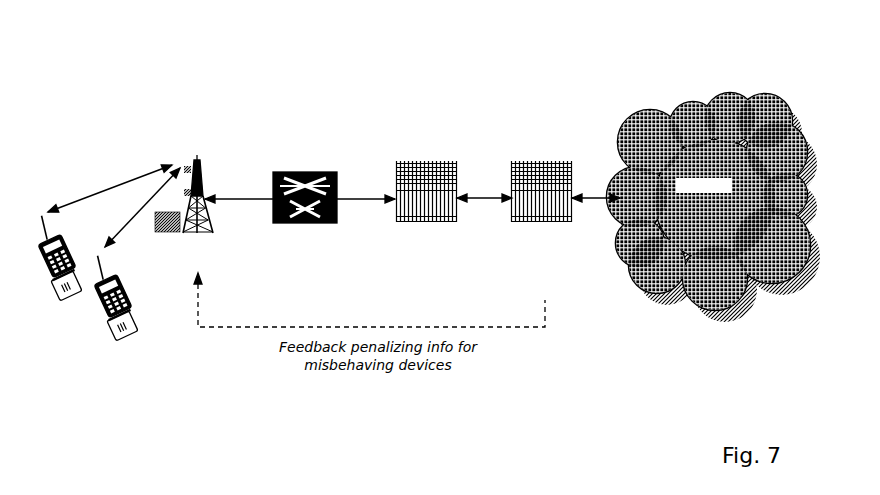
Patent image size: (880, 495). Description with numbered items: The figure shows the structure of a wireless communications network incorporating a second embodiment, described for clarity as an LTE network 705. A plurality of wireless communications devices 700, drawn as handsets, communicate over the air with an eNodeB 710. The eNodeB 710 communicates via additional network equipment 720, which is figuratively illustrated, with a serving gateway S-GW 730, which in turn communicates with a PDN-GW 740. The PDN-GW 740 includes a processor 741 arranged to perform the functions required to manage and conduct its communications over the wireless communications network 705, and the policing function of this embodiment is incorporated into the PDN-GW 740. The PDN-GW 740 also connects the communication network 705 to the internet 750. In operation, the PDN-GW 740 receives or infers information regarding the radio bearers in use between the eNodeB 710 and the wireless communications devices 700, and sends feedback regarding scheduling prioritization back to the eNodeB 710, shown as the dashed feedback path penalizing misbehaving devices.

The wireless communications devices 700 is at (142, 348).
The LTE network 705 is at (583, 103).
The eNodeB 710 is at (185, 198).
The additional network equipment 720 is at (305, 216).
The serving gateway S-GW 730 is at (426, 192).
The PDN-GW 740 is at (536, 191).
The processor 741 is at (562, 205).
The internet 750 is at (713, 207).